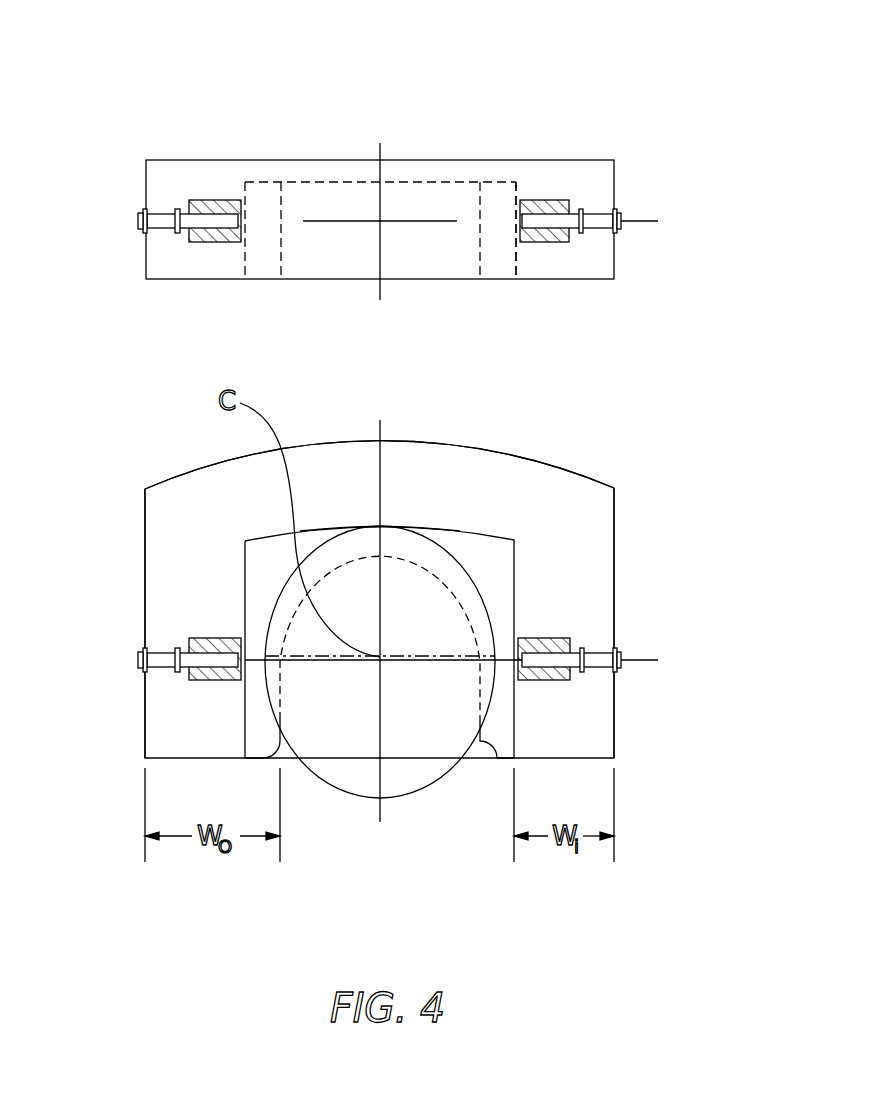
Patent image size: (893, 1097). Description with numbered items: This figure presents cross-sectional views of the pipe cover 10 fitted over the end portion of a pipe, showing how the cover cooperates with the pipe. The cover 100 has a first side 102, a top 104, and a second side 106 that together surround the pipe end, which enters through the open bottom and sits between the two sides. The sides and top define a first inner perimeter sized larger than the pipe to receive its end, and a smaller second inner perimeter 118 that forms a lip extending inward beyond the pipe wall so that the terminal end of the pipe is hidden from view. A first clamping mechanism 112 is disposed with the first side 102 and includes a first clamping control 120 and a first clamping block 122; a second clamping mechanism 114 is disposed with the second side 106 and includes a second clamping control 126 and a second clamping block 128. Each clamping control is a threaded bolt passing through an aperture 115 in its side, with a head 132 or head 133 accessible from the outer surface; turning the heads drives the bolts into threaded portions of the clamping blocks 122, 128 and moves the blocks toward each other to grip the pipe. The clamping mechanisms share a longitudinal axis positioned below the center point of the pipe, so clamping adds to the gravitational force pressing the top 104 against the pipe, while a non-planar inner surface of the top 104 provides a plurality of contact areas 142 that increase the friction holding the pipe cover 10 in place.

The pipe cover 10 is at (288, 88).
The cover 100 is at (150, 506).
The first side 102 is at (603, 580).
The top 104 is at (514, 467).
The second side 106 is at (150, 698).
The first clamping mechanism 112 is at (567, 682).
The second clamping mechanism 114 is at (165, 657).
The aperture 115 is at (170, 207).
The second inner perimeter 118 is at (283, 695).
The first clamping control 120 is at (600, 210).
The first clamping block 122 is at (547, 202).
The second clamping control 126 is at (138, 213).
The second clamping block 128 is at (217, 237).
The head 132 is at (623, 211).
The head 133 is at (136, 218).
The contact areas 142 is at (408, 523).